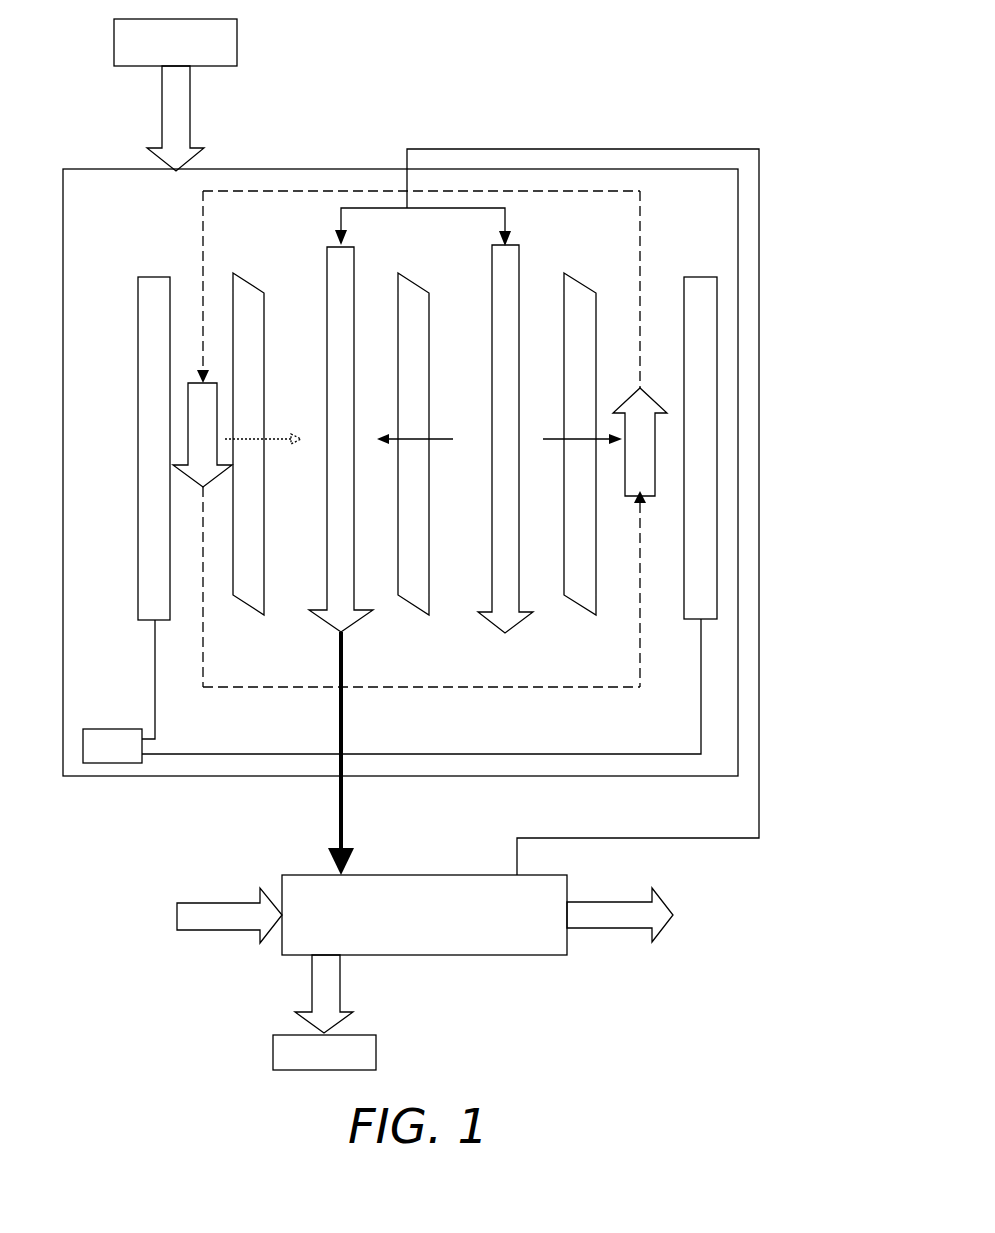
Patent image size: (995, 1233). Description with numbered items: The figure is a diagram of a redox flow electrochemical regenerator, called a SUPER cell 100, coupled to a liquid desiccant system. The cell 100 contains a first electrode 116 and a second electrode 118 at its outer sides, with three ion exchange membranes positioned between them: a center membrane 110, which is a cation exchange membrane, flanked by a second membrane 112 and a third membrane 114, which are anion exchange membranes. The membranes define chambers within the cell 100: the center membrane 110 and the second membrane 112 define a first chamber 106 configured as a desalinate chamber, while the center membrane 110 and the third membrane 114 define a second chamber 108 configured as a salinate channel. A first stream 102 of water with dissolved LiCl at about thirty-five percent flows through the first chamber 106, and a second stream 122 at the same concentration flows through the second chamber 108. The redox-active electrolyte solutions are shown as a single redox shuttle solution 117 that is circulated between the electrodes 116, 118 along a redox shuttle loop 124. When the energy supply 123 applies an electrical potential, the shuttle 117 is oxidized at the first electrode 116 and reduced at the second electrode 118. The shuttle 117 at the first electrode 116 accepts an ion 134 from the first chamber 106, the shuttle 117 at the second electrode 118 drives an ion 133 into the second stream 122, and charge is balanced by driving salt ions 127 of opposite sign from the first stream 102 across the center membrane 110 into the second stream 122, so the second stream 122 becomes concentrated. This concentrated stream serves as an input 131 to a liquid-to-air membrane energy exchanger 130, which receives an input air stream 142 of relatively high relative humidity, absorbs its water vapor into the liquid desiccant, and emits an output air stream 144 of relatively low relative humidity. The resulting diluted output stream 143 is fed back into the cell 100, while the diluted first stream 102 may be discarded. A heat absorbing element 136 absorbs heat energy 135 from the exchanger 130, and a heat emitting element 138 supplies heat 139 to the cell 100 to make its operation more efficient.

The SUPER cell 100 is at (668, 133).
The first stream 102 is at (520, 263).
The first chamber 106 is at (486, 439).
The second chamber 108 is at (322, 438).
The center membrane 110 is at (415, 603).
The second membrane 112 is at (571, 603).
The third membrane 114 is at (248, 603).
The first electrode 116 is at (695, 277).
The redox shuttle solution 117 is at (203, 428).
The second electrode 118 is at (138, 317).
The second stream 122 is at (331, 241).
The energy supply 123 is at (110, 729).
The redox shuttle loop 124 is at (297, 690).
The salt ions 127 is at (442, 442).
The liquid-to-air membrane energy exchanger 130 is at (430, 875).
The input 131 is at (337, 812).
The ion 133 is at (277, 441).
The ion 134 is at (556, 442).
The heat energy 135 is at (341, 990).
The heat absorbing element 136 is at (377, 1052).
The heat emitting element 138 is at (238, 43).
The heat 139 is at (191, 108).
The input air stream 142 is at (207, 931).
The diluted output stream 143 is at (620, 838).
The output air stream 144 is at (598, 929).